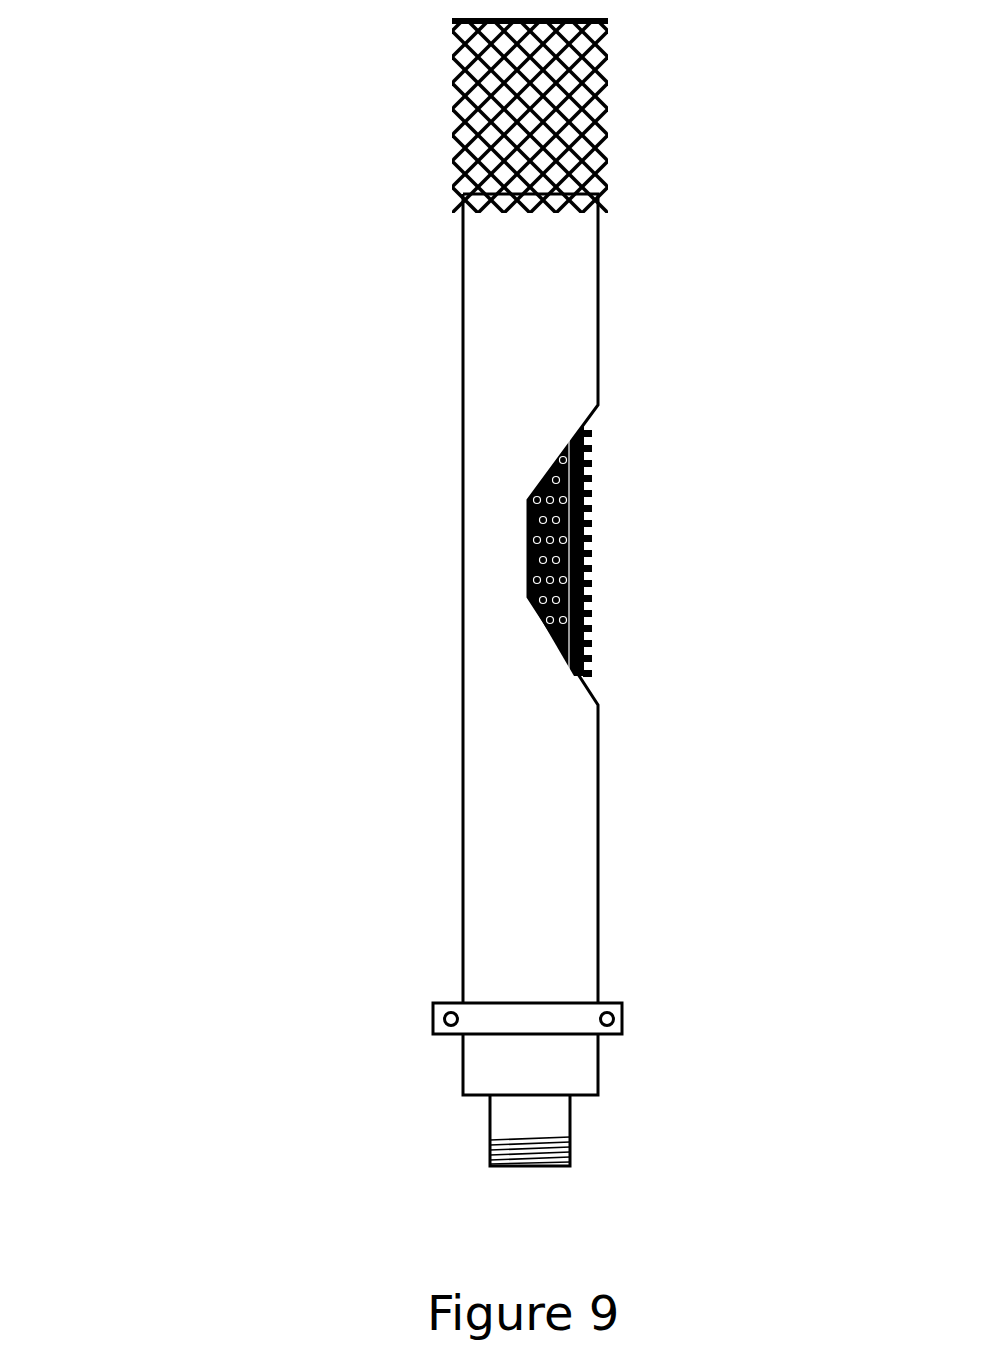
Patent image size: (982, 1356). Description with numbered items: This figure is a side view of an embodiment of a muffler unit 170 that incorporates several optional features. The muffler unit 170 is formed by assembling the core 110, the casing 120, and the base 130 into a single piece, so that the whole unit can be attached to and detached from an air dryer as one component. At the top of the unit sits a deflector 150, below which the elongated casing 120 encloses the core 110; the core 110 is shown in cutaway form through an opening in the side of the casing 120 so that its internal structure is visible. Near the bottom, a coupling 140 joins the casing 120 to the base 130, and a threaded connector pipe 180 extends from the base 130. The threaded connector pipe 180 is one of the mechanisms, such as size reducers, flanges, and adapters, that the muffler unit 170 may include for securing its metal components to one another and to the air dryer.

The muffler unit 170 is at (280, 100).
The deflector 150 is at (610, 103).
The casing 120 is at (461, 392).
The core 110 is at (608, 547).
The coupling 140 is at (432, 1018).
The base 130 is at (601, 1062).
The threaded connector pipe 180 is at (488, 1134).